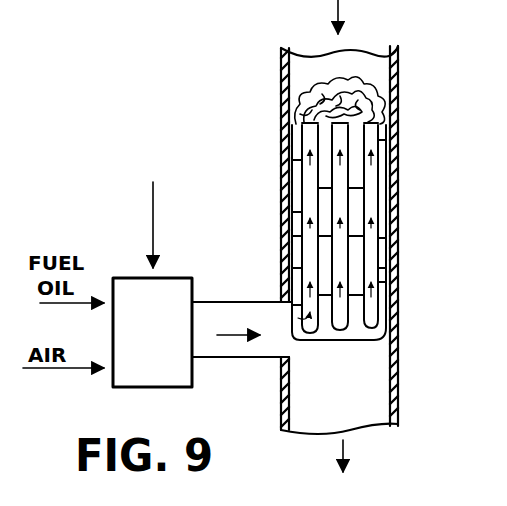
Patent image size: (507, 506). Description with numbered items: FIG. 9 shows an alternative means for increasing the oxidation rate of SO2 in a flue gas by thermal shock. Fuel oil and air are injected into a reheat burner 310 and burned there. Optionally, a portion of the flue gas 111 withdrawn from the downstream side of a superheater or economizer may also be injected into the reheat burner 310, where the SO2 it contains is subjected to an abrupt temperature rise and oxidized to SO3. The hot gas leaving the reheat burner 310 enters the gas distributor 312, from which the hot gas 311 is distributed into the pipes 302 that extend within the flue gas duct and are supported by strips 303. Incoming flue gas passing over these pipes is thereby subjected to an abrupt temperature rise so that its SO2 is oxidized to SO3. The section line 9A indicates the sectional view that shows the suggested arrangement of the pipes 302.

The pipes 302 is at (298, 133).
The strips 303 is at (398, 292).
The reheat burner 310 is at (176, 346).
The hot gas 311 is at (305, 241).
The gas distributor 312 is at (263, 270).
The flue gas 111 is at (152, 197).
The section line 9A- 9A is at (238, 175).